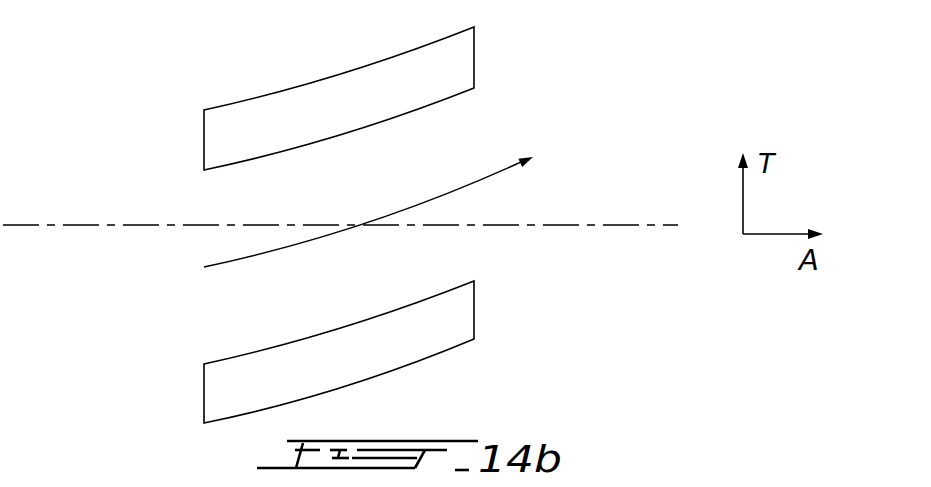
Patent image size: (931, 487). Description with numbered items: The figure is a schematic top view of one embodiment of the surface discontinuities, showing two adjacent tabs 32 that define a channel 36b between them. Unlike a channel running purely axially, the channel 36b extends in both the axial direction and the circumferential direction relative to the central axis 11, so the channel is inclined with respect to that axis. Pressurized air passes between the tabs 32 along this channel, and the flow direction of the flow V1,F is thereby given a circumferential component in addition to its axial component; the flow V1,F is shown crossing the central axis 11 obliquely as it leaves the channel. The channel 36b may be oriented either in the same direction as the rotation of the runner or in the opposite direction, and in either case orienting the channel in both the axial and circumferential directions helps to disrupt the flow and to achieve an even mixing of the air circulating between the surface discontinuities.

The tabs 32 is at (497, 55).
The channel 36b is at (356, 195).
The flow direction of the flow V1,F is at (480, 177).
The central axis 11 is at (658, 221).